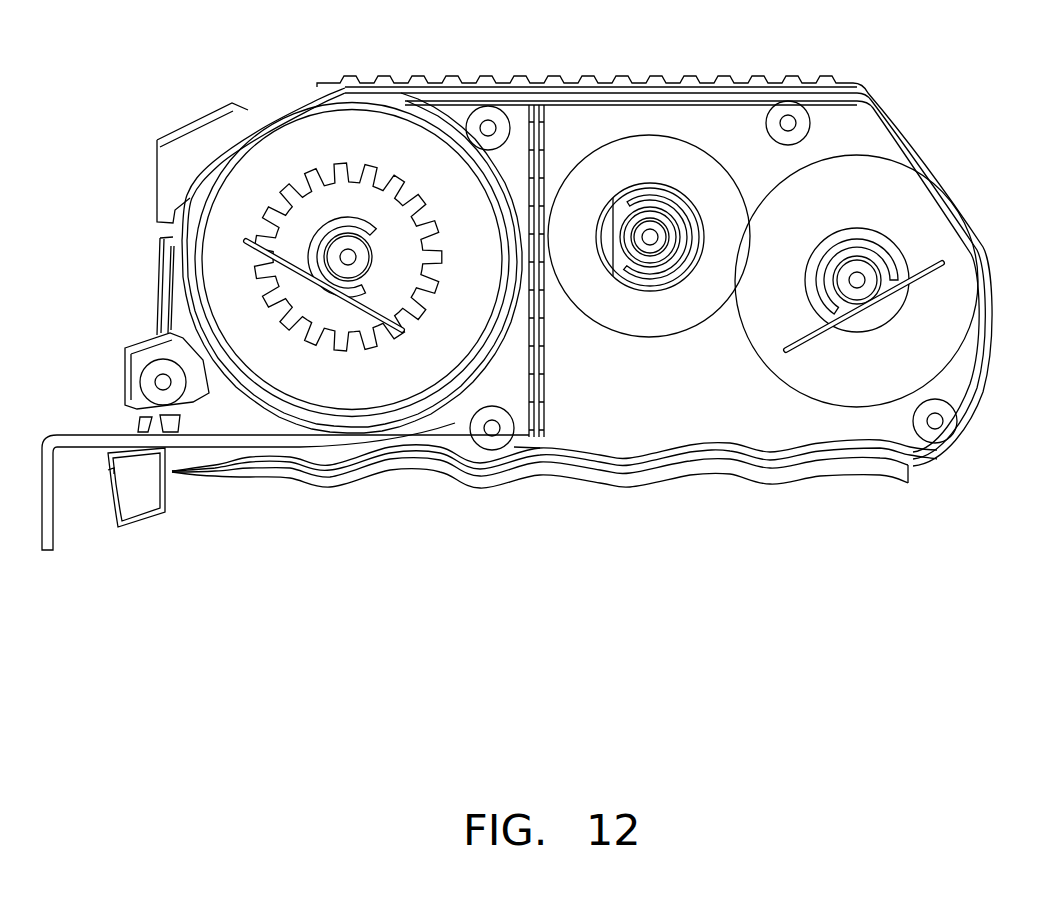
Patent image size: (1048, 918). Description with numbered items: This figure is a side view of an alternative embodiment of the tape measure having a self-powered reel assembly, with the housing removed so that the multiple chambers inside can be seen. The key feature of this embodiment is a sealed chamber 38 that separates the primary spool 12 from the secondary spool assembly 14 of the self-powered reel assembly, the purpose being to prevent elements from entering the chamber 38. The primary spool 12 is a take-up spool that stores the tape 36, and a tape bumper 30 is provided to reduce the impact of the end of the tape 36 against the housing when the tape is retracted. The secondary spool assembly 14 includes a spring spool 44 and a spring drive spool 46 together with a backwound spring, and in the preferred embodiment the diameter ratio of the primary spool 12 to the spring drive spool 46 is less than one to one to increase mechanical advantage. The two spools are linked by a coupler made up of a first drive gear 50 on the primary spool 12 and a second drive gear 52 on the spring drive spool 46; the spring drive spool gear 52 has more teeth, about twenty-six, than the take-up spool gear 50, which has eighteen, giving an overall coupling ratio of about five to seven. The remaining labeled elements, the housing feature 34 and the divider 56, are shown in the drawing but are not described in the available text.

The primary spool 12 is at (317, 133).
The secondary spool assembly 14 is at (806, 187).
The tape bumper 30 is at (138, 500).
The housing 34 is at (738, 141).
The tape 36 is at (262, 440).
The sealed chamber 38 is at (513, 165).
The spring spool 44 is at (868, 362).
The spring drive spool 46 is at (615, 217).
The first drive gear 50 is at (265, 225).
The second drive gear 52 is at (667, 323).
The divider wall 56 is at (537, 383).